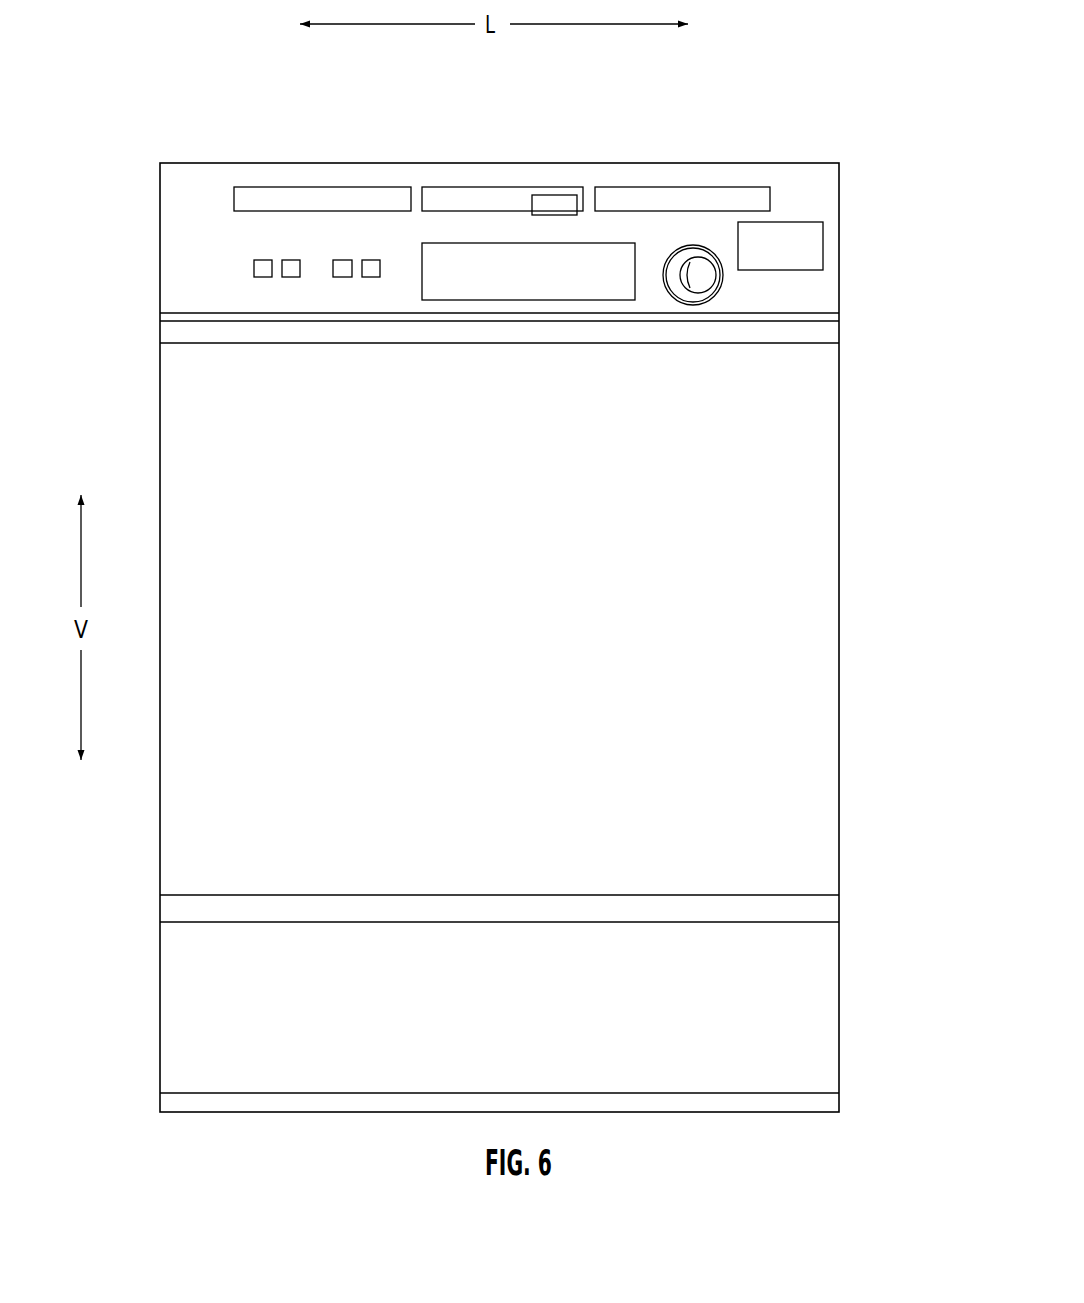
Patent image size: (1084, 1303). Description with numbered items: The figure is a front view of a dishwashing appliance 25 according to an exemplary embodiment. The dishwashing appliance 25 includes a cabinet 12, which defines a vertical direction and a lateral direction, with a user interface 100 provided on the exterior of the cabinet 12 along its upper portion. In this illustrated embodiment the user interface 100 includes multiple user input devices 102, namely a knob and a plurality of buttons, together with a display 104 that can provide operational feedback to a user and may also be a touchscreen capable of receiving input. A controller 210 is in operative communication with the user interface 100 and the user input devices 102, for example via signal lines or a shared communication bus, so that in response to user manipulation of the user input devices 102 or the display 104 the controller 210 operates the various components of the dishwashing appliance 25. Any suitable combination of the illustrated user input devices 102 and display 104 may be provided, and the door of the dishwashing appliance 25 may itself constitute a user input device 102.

The dishwashing appliance 25 is at (753, 123).
The cabinet 12 is at (785, 598).
The user interface 100 is at (812, 212).
The user input devices 102 is at (340, 262).
The display 104 is at (500, 285).
The controller 210 is at (822, 245).